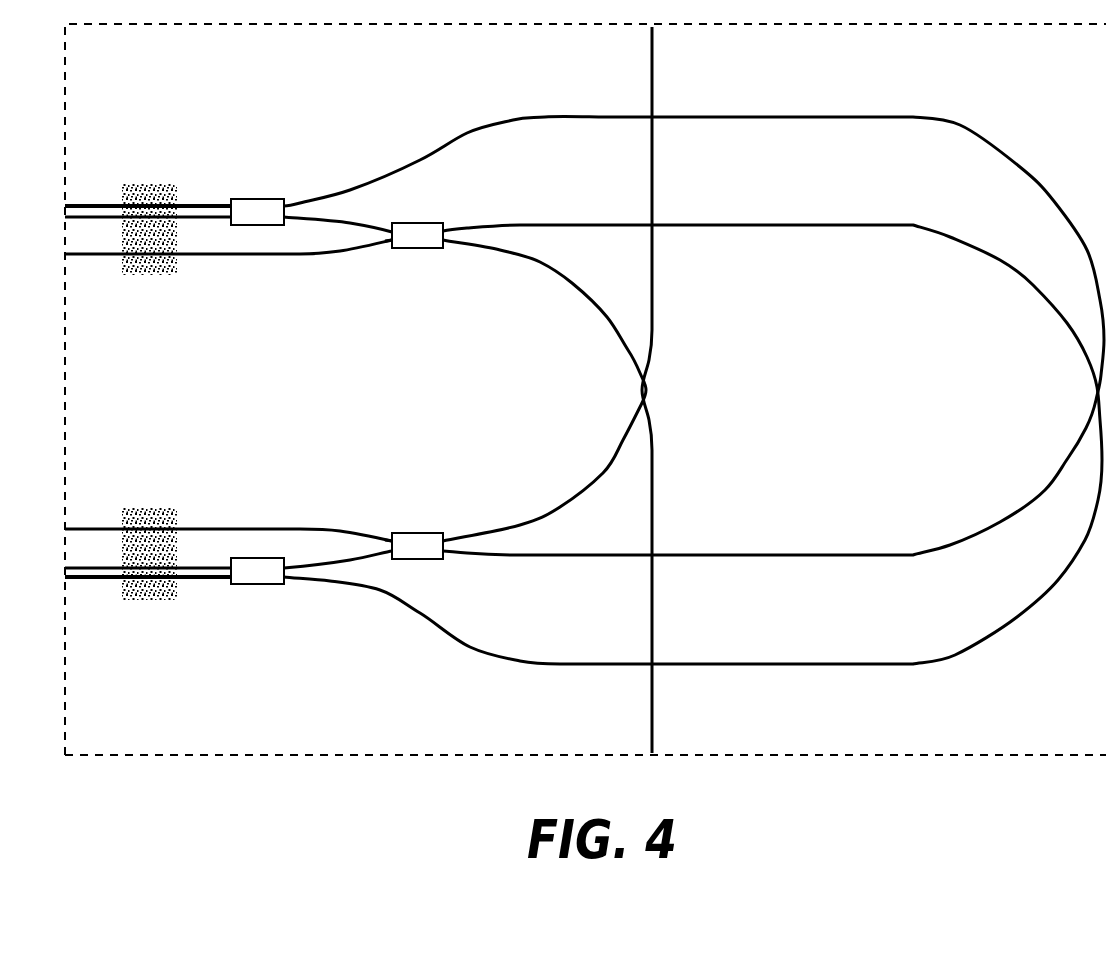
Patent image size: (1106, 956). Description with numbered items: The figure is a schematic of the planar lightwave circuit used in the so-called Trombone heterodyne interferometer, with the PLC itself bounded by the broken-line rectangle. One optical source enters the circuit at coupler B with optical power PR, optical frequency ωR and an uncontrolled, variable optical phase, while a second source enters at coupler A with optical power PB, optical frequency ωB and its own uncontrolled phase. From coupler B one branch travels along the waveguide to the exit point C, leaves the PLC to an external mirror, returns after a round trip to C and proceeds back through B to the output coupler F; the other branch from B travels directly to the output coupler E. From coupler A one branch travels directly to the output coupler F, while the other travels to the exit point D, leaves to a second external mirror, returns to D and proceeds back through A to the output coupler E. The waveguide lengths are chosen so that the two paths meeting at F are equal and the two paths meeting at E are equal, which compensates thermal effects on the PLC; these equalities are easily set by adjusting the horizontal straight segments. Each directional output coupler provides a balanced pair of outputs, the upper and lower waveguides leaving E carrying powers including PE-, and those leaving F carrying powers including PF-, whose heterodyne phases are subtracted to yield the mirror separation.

The coupler A is at (417, 251).
The coupler B is at (417, 531).
The output coupler E is at (257, 197).
The output coupler F is at (257, 586).
The exit point C is at (663, 200).
The exit point D is at (663, 581).
The lower output power of coupler E PE- is at (197, 210).
The lower output power of coupler F PF- is at (197, 584).
The optical power of second source PB is at (381, 249).
The optical power of first source PR is at (381, 532).